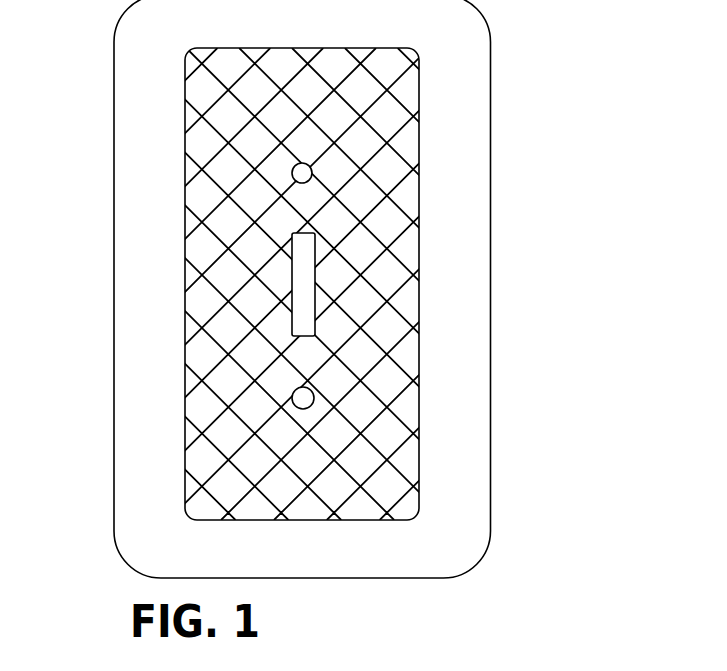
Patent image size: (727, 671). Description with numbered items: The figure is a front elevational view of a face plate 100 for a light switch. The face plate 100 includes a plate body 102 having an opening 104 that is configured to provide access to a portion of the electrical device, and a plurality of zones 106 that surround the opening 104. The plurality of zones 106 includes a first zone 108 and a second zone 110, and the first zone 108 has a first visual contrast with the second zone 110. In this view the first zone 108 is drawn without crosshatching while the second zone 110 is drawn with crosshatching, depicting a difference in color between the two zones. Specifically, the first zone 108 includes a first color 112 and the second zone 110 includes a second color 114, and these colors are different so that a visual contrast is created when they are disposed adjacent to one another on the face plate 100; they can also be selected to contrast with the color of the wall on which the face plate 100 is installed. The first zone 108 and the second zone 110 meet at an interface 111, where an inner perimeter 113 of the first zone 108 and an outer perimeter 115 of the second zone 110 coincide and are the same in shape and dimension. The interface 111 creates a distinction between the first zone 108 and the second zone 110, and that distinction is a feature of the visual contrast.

The face plate 100 is at (512, 104).
The plate body 102 is at (147, 122).
The opening 104 is at (306, 280).
The plurality of zones 106 is at (421, 387).
The first zone 108 is at (363, 284).
The first color 112 is at (463, 305).
The second zone 110 is at (363, 284).
The second color 114 is at (402, 249).
The interface 111 is at (419, 284).
The inner perimeter 113 is at (419, 284).
The outer perimeter 115 is at (420, 182).